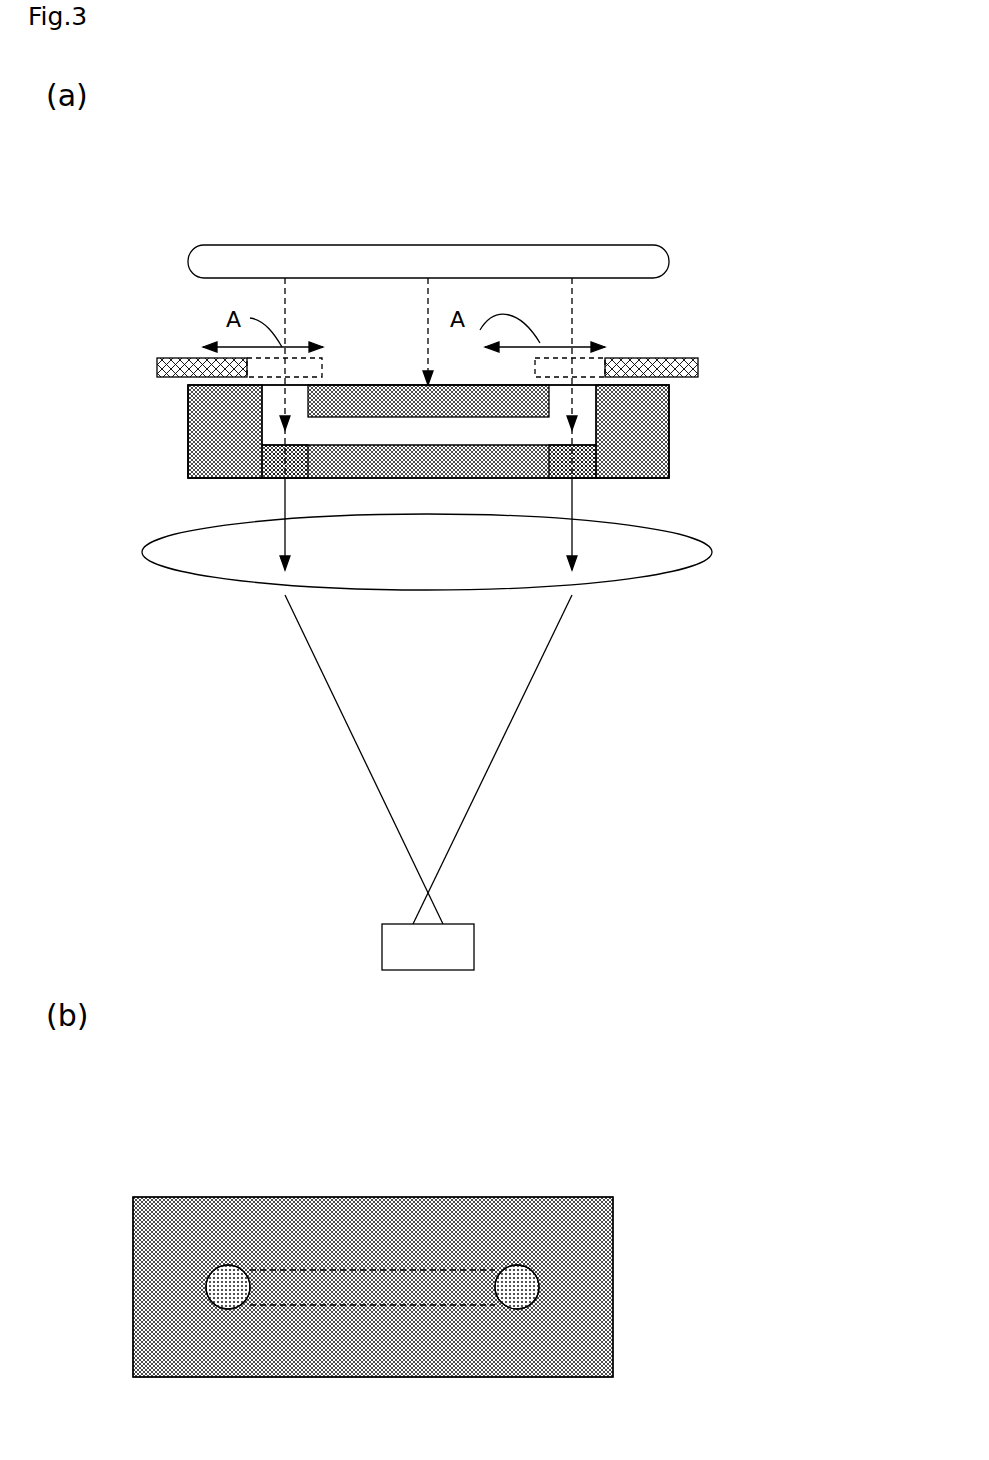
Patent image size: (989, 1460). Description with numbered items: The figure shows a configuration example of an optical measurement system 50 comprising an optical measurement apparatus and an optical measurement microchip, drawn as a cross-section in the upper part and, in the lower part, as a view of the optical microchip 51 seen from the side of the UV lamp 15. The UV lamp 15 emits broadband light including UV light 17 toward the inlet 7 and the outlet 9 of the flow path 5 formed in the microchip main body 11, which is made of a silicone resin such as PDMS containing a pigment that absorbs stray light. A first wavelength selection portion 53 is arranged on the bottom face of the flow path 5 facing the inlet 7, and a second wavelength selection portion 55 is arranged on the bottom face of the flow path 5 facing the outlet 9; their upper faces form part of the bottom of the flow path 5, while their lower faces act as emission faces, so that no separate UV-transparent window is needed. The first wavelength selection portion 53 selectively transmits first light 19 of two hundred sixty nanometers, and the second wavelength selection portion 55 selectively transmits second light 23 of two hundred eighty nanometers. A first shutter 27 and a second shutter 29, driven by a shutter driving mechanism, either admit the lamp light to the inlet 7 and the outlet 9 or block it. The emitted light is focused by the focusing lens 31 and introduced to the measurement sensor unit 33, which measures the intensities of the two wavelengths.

The flow path 5 is at (670, 427).
The inlet 7 is at (188, 405).
The outlet 9 is at (670, 393).
The microchip main body 11 is at (188, 447).
The UV lamp 15 is at (232, 260).
The UV light 17 is at (572, 300).
The first light 19 is at (283, 520).
The second light 23 is at (572, 480).
The first shutter 27 is at (190, 357).
The second shutter 29 is at (625, 355).
The focusing lens 31 is at (633, 588).
The measurement sensor unit 33 is at (452, 948).
The optical measurement system 50 is at (535, 165).
The optical microchip 51 is at (693, 452).
The first wavelength selection portion 53 is at (263, 478).
The second wavelength selection portion 55 is at (590, 480).